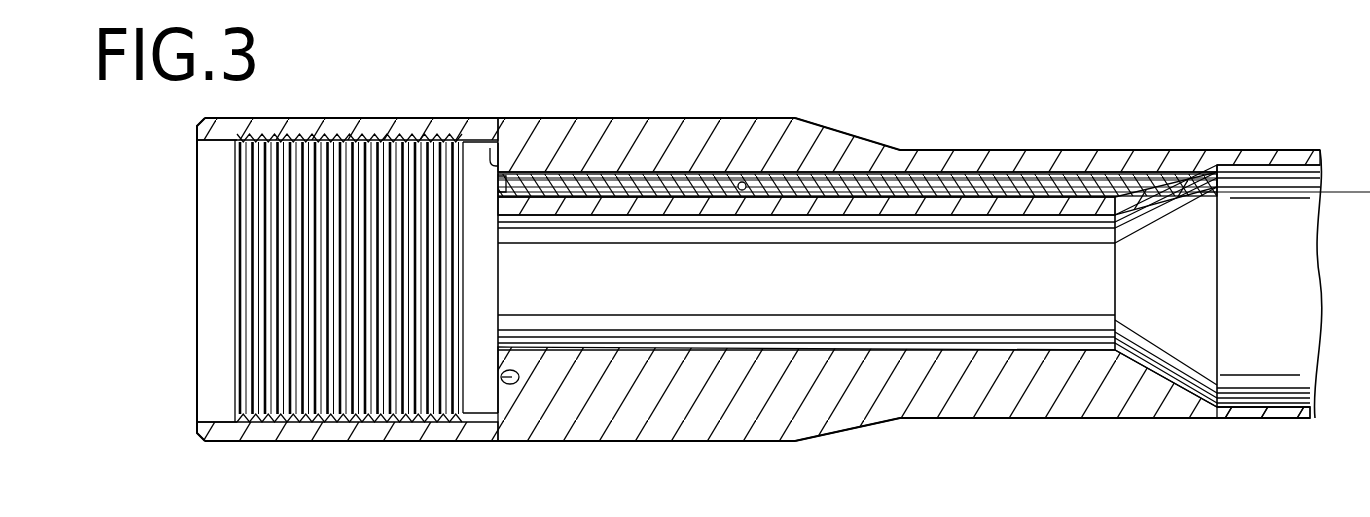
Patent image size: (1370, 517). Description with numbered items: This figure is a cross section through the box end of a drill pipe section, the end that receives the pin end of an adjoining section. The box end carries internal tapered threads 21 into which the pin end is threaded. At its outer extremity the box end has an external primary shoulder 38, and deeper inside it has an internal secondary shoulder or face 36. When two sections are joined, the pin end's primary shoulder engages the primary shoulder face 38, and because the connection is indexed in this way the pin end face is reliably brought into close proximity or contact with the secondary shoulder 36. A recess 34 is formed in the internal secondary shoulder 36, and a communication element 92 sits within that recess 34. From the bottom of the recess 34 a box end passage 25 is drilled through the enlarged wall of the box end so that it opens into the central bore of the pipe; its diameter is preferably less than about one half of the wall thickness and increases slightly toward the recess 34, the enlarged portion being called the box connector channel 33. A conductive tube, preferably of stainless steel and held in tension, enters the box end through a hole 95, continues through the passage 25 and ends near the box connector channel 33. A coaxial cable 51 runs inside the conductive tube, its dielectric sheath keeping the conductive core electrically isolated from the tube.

The internal tapered threads 21 is at (351, 424).
The external primary shoulder 38 is at (198, 128).
The box end passage 25 is at (1008, 188).
The box connector channel 33 is at (597, 182).
The recess 34 is at (498, 182).
The internal secondary shoulder 36 is at (490, 148).
The coaxial cable 51 is at (862, 187).
The hole 95 is at (1179, 185).
The communication element 92 is at (520, 378).